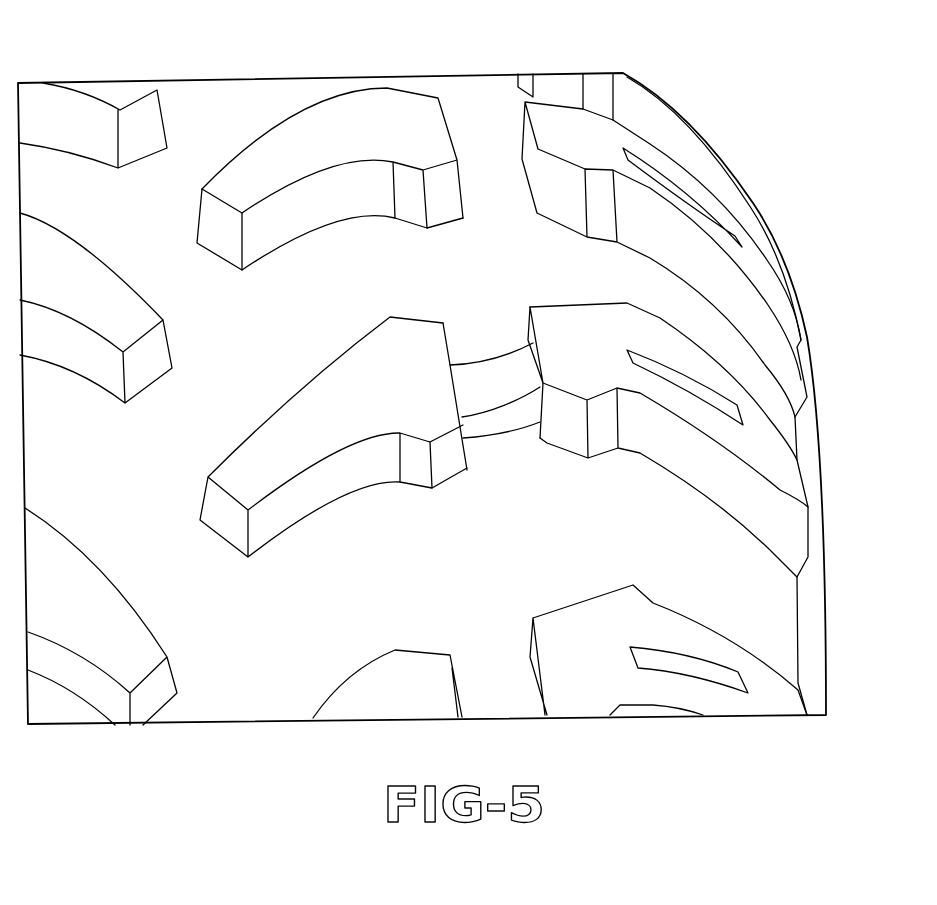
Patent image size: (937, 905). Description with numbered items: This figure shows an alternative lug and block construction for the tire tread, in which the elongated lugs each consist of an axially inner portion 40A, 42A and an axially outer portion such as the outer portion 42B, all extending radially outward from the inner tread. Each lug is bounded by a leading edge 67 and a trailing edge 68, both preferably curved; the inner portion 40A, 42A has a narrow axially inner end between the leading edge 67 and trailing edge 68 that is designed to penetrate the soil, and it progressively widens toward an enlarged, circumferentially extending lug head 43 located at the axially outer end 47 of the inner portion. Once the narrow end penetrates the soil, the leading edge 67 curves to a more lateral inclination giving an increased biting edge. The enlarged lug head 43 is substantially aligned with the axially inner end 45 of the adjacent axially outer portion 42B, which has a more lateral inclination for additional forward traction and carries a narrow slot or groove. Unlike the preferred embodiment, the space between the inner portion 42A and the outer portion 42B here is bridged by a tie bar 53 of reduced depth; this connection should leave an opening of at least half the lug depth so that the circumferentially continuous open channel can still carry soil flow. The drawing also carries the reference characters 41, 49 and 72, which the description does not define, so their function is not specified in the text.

The axially inner portion 40A is at (92, 585).
The shoulder tread block 41 is at (211, 219).
The axially inner portion 42A is at (285, 418).
The axially outer portion 42B is at (597, 362).
The enlarged lug head 43 is at (413, 398).
The axially inner end 45 is at (537, 341).
The axially outer end 47 is at (447, 338).
The tread shoulder 49 is at (783, 485).
The tie bar 53 is at (503, 377).
The leading edge 67 is at (320, 210).
The trailing edge 68 is at (330, 104).
The sipe 72 is at (652, 655).